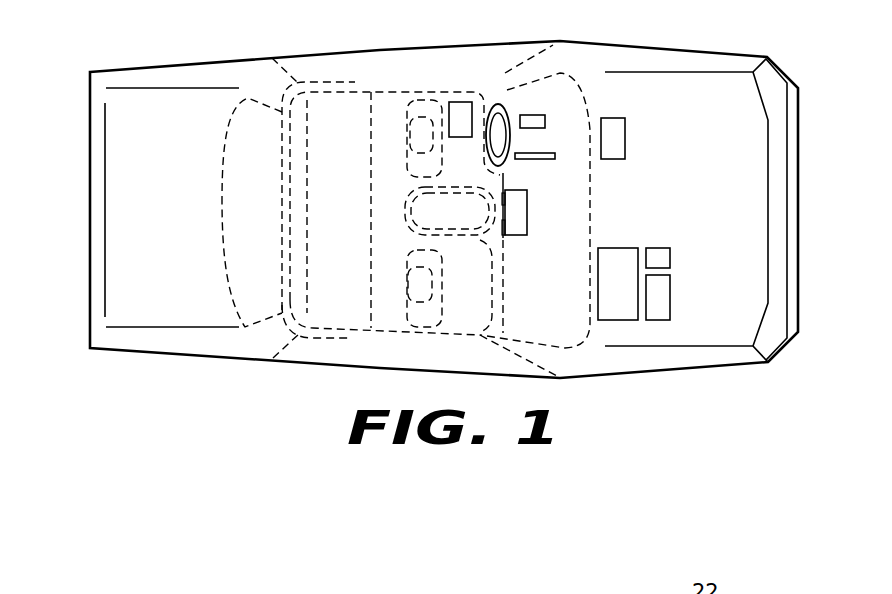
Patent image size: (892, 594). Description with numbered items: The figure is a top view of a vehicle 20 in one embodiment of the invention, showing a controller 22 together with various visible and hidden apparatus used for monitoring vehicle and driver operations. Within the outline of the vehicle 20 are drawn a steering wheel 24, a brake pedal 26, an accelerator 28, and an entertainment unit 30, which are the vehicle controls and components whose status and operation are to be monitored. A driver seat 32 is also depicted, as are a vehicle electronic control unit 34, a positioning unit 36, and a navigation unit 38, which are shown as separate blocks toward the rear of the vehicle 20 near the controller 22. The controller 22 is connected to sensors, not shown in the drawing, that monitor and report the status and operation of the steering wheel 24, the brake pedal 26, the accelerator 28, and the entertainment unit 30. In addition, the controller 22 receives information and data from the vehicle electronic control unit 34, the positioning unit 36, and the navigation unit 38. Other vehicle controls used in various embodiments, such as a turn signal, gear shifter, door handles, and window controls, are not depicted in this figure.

The vehicle 20 is at (672, 47).
The controller 22 is at (608, 247).
The steering wheel 24 is at (497, 104).
The brake pedal 26 is at (526, 113).
The accelerator 28 is at (533, 152).
The entertainment unit 30 is at (520, 188).
The driver seat 32 is at (459, 102).
The vehicle electronic control unit 34 is at (615, 117).
The positioning unit 36 is at (662, 247).
The navigation unit 38 is at (672, 298).